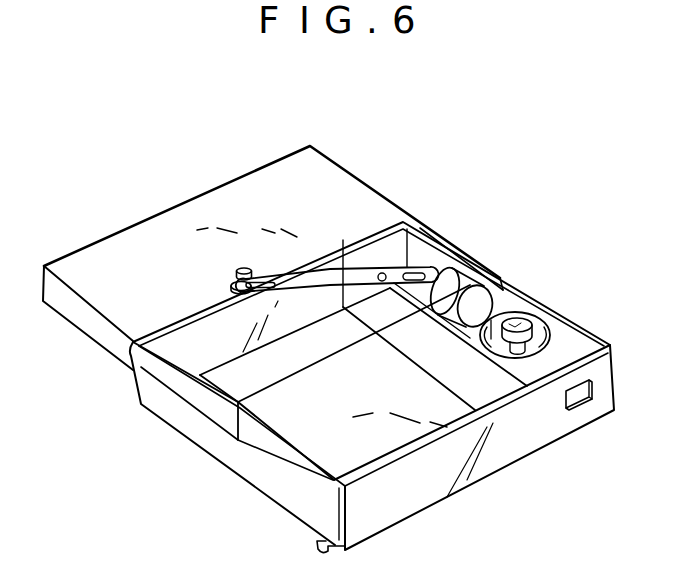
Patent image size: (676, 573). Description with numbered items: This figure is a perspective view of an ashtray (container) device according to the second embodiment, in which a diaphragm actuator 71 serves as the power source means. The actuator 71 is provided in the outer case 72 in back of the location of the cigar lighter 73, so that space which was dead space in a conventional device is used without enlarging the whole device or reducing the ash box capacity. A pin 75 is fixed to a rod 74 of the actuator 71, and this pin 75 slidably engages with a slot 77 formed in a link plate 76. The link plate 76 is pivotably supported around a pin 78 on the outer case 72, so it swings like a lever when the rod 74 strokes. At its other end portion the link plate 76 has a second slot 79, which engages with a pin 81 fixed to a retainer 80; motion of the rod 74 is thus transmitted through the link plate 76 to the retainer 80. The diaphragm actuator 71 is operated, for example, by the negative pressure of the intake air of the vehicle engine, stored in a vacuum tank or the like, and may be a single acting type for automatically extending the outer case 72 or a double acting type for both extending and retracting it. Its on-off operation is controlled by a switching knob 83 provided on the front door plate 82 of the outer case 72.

The diaphragm actuator 71 is at (483, 267).
The outer case 72 is at (575, 335).
The cigar lighter 73 is at (532, 313).
The rod 74 is at (412, 296).
The pin 75 is at (445, 240).
The link plate 76 is at (352, 237).
The slot 77 is at (427, 243).
The pin 78 is at (378, 280).
The slot 79 is at (272, 267).
The retainer 80 is at (228, 197).
The pin 81 is at (240, 268).
The front door plate 82 is at (520, 437).
The switching knob 83 is at (587, 407).